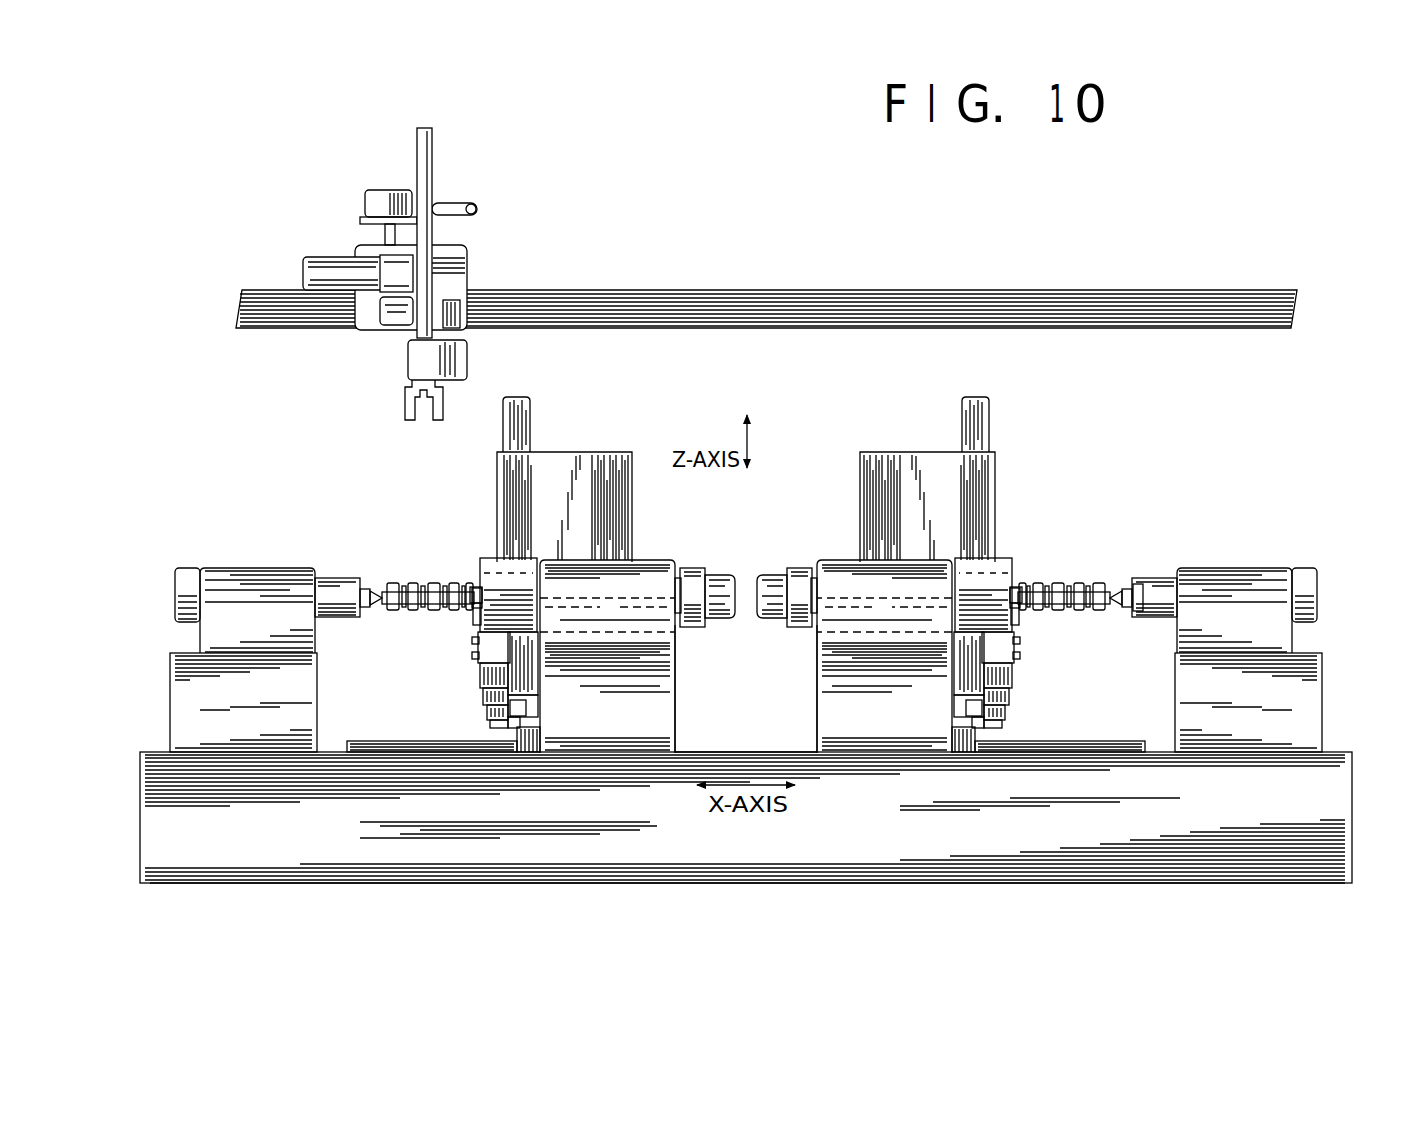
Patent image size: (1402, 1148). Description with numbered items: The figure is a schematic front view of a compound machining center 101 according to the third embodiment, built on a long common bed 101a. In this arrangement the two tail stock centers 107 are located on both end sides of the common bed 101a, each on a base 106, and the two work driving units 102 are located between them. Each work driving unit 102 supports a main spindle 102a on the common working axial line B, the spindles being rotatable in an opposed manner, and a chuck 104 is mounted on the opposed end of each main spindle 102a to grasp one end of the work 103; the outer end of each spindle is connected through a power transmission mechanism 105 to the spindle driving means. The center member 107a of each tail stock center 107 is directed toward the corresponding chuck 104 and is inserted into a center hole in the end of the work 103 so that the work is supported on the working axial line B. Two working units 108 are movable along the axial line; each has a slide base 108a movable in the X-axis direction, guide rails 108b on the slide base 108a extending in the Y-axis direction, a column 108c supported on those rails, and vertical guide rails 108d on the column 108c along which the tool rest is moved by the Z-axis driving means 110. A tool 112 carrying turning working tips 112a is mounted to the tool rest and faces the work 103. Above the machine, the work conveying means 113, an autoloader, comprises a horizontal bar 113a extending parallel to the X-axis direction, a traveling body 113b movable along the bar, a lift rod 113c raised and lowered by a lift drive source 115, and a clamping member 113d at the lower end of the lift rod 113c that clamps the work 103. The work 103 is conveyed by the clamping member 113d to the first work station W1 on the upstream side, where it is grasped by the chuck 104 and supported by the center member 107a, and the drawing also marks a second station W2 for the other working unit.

The compound machining center 101 is at (1335, 750).
The common bed 101a is at (783, 853).
The work driving unit 102 is at (823, 718).
The main spindle 102a is at (632, 595).
The work 103 is at (418, 585).
The chuck 104 is at (487, 570).
The power transmission mechanism 105 is at (758, 582).
The base 106 is at (185, 668).
The tail stock center 107 is at (232, 578).
The center member 107a is at (368, 580).
The working unit 108 is at (570, 447).
The slide base 108a is at (517, 738).
The guide rail 108b is at (538, 703).
The column 108c is at (613, 460).
The guide rail 108d is at (500, 487).
The Z-axis driving means 110 is at (520, 404).
The tool 112 is at (478, 666).
The turning working tip 112a is at (472, 655).
The work conveying means 113 is at (385, 347).
The horizontal bar 113a is at (713, 318).
The traveling body 113b is at (468, 256).
The lift rod 113c is at (432, 168).
The clamping member 113d is at (403, 398).
The lift drive source 115 is at (318, 265).
The working axial line B is at (1148, 590).
The first work station W1 is at (432, 729).
The second workpiece W2 is at (1060, 729).